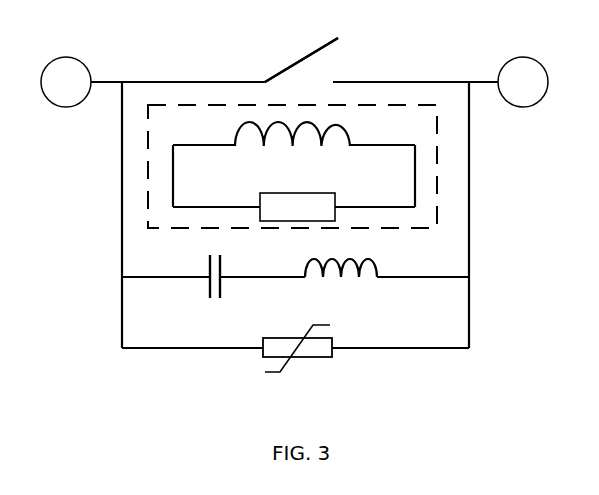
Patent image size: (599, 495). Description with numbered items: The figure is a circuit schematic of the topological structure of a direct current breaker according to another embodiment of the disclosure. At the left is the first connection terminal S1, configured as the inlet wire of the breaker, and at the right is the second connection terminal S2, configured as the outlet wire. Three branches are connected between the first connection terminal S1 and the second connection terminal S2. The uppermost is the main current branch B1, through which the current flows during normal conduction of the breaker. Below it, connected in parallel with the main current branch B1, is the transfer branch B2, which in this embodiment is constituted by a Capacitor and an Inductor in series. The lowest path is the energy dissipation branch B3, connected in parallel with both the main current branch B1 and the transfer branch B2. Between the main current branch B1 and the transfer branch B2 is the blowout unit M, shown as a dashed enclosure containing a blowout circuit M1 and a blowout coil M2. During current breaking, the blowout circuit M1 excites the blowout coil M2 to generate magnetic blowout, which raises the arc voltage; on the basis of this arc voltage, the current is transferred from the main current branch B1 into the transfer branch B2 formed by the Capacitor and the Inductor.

The first connection terminal S1 is at (66, 82).
The second connection terminal S2 is at (523, 82).
The main current branch B1 is at (150, 82).
The transfer branch B2 is at (453, 273).
The energy dissipation branch B3 is at (407, 348).
The blowout unit M is at (437, 203).
The blowout circuit M1 is at (297, 209).
The blowout coil M2 is at (346, 131).
The capacitor Capacitor is at (210, 289).
The inductor Inductor is at (318, 277).